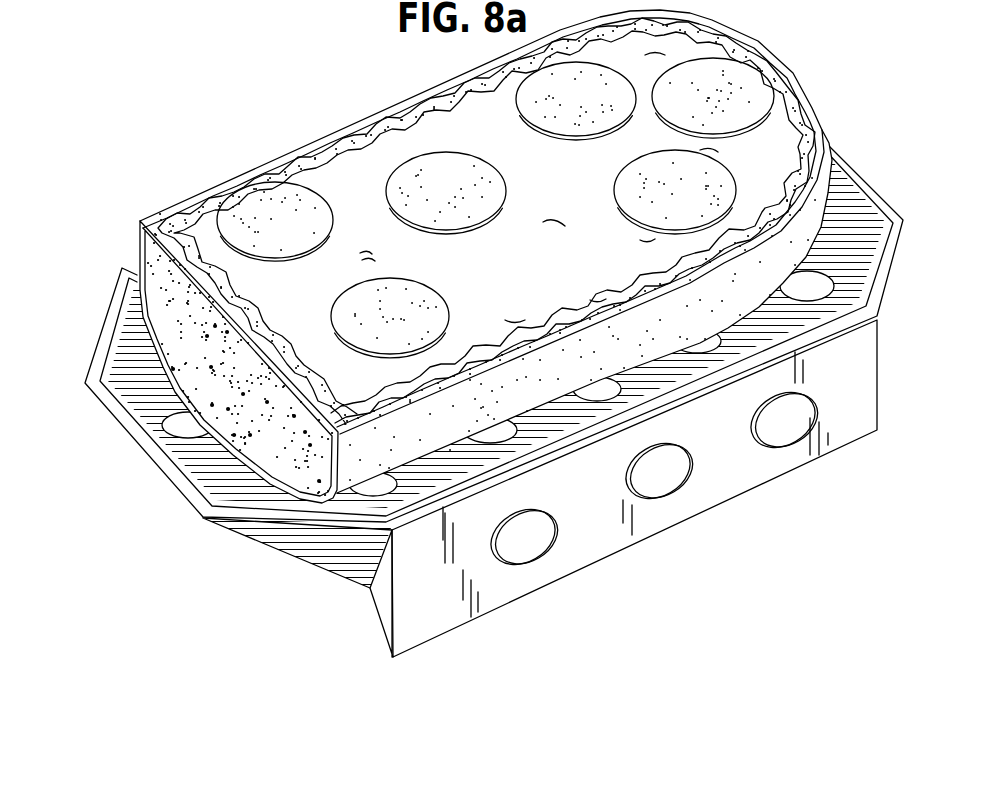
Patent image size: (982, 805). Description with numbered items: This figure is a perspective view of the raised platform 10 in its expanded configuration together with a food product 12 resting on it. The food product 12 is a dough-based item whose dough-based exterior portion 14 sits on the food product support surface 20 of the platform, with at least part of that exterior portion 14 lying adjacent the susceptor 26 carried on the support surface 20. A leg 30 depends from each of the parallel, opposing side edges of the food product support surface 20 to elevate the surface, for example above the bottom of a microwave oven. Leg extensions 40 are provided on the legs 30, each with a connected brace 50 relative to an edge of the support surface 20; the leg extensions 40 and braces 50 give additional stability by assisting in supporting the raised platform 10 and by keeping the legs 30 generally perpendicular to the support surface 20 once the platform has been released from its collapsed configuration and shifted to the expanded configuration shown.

The raised platform 10 is at (94, 286).
The food product 12 is at (343, 170).
The dough-based exterior portion 14 is at (138, 248).
The food product support surface 20 is at (140, 437).
The susceptor 26 is at (197, 468).
The leg 30 is at (580, 532).
The leg extension 40 is at (383, 627).
The brace 50 is at (313, 547).